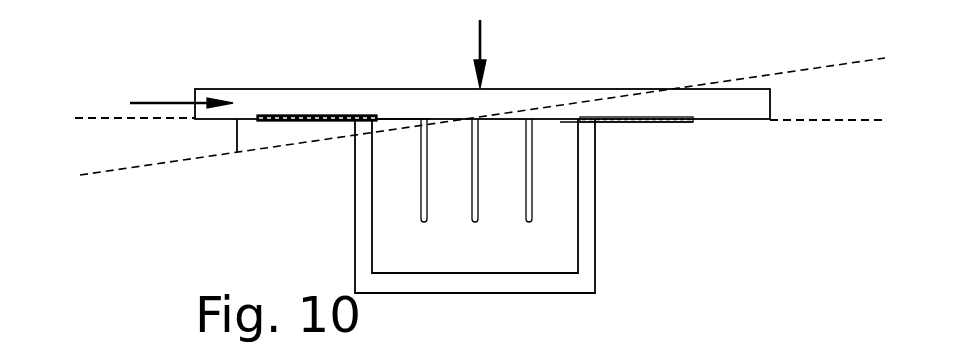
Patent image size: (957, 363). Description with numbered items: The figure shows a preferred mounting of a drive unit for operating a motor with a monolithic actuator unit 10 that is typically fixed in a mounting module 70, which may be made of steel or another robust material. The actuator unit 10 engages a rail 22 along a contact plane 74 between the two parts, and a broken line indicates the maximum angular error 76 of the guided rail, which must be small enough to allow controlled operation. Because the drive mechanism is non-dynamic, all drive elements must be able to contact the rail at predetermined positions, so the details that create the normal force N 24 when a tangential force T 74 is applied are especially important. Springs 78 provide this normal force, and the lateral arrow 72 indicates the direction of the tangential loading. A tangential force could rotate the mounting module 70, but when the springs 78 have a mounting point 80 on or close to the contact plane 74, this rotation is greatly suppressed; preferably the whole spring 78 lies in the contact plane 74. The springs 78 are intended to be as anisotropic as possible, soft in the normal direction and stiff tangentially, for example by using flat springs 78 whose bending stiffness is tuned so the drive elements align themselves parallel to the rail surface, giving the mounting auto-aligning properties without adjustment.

The monolithic actuator unit 10 is at (508, 260).
The rail 22 is at (728, 111).
The normal force N 24 is at (504, 54).
The mounting module 70 is at (583, 284).
The lateral force arrow 72 is at (181, 84).
The contact plane 74 is at (90, 116).
The maximum angular error 76 is at (234, 152).
The spring 78 is at (298, 122).
The mounting point 80 is at (253, 116).